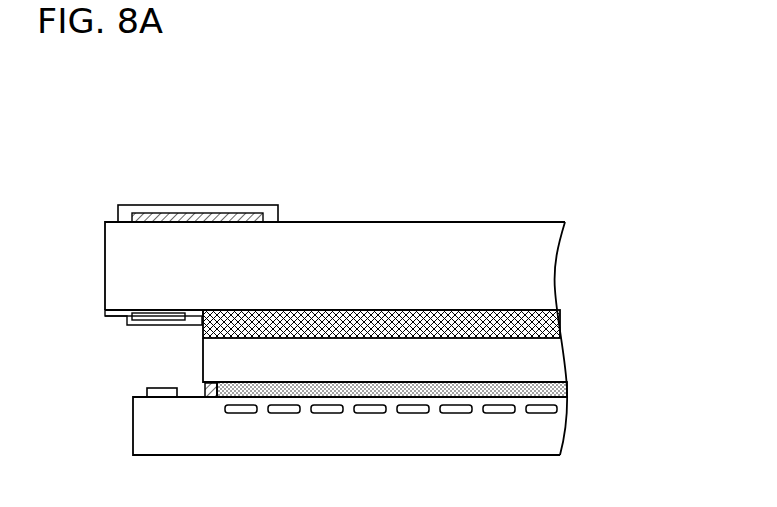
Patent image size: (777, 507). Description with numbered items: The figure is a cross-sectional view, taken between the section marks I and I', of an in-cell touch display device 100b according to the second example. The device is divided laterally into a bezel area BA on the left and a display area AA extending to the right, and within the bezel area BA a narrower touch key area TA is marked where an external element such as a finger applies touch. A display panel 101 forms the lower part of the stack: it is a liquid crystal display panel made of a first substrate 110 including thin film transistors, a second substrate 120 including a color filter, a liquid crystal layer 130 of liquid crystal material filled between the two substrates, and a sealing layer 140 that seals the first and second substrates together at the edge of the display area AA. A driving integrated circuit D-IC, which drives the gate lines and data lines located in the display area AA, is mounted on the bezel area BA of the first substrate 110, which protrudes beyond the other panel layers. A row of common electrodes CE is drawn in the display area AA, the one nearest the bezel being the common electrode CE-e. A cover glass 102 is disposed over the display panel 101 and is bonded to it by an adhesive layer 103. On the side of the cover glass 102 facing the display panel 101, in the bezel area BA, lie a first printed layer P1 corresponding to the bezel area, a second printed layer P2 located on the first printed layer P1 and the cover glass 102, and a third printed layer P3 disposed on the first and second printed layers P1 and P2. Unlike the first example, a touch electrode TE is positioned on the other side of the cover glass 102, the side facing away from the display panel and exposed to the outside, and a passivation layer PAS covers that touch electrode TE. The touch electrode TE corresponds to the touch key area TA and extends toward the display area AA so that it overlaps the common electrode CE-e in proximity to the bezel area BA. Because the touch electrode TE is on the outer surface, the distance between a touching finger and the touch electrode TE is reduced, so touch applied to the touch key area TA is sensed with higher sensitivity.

The in-cell touch display device 100b is at (100, 116).
The bezel area BA is at (105, 202).
The display area AA is at (565, 165).
The touch key area TA is at (192, 198).
The passivation layer PAS is at (118, 212).
The touch electrode TE is at (278, 213).
The cover glass 102 is at (560, 268).
The adhesive layer 103 is at (560, 323).
The second substrate 120 is at (565, 352).
The liquid crystal layer 130 is at (567, 388).
The sealing layer 140 is at (204, 390).
The first substrate 110 is at (565, 425).
The display panel 101 is at (658, 355).
The first printed layer P1 is at (125, 309).
The second printed layer P2 is at (163, 312).
The third printed layer P3 is at (105, 318).
The driving integrated circuit D-IC is at (147, 392).
The common electrode CE is at (372, 414).
The common electrode in proximity to the bezel area CE-e is at (243, 414).
The section line start I is at (132, 481).
The section line end I' is at (560, 483).